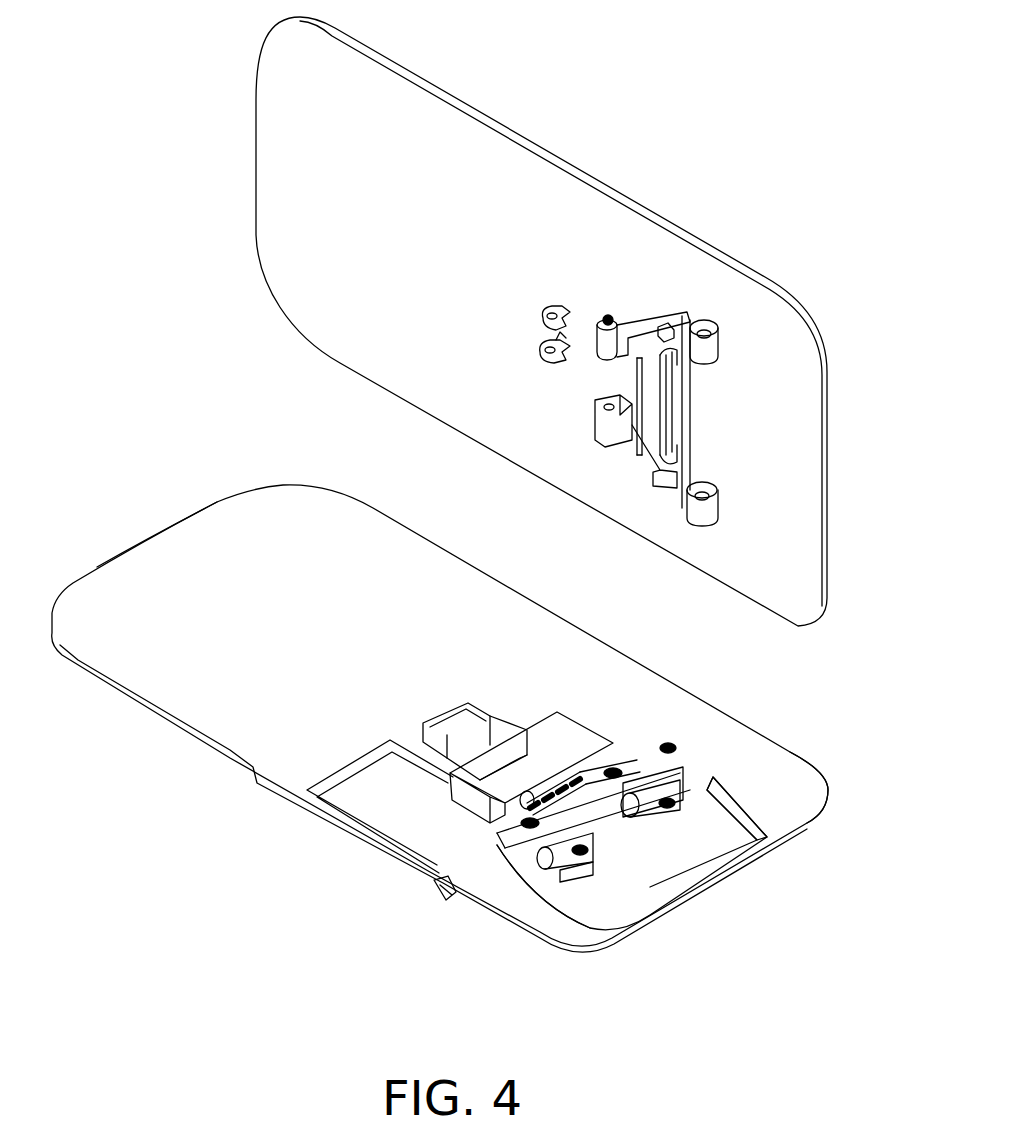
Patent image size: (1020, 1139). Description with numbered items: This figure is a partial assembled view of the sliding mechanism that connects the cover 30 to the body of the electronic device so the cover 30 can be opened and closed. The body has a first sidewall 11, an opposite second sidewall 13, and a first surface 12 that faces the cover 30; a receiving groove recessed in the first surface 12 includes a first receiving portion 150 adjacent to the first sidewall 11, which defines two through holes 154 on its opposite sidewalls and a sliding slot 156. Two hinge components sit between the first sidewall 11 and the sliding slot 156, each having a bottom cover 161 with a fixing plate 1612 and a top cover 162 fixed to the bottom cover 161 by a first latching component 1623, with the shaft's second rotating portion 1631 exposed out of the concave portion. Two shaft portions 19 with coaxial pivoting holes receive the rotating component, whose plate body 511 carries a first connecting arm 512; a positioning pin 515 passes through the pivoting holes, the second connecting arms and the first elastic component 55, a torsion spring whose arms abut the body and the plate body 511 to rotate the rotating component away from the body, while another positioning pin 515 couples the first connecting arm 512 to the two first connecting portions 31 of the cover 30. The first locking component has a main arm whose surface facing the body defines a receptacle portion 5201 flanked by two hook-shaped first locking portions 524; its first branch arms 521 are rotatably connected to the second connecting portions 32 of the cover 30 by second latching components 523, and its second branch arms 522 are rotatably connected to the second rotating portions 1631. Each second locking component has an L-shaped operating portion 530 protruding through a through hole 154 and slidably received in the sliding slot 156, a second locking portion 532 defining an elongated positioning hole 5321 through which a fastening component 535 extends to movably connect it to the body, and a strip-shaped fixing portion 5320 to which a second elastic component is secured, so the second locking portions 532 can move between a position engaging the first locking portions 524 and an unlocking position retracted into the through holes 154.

The first sidewall 11 is at (800, 805).
The first surface 12 is at (237, 555).
The second sidewall 13 is at (153, 538).
The shaft portion 19 is at (618, 735).
The cover 30 is at (456, 150).
The first connecting portion 31 is at (556, 300).
The second connecting portion 32 is at (598, 336).
The first elastic component 55 is at (575, 720).
The first receiving portion 150 is at (668, 870).
The through hole 154 is at (665, 750).
The sliding slot 156 is at (612, 847).
The bottom cover 161 is at (560, 877).
The top cover 162 is at (520, 873).
The plate body 511 is at (505, 720).
The first connecting arm 512 is at (455, 713).
The positioning pin 515 is at (477, 717).
The first branch arm 521 is at (612, 338).
The second branch arm 522 is at (707, 348).
The second latching component 523 is at (610, 318).
The first locking portion 524 is at (672, 322).
The operating portion 530 is at (437, 890).
The second locking portion 532 is at (667, 745).
The fastening component 535 is at (710, 783).
The fixing plate 1612 is at (460, 895).
The first latching component 1623 is at (700, 830).
The second rotating portion 1631 is at (690, 780).
The receptacle portion 5201 is at (665, 407).
The fixing portion 5320 is at (617, 855).
The positioning hole 5321 is at (490, 825).